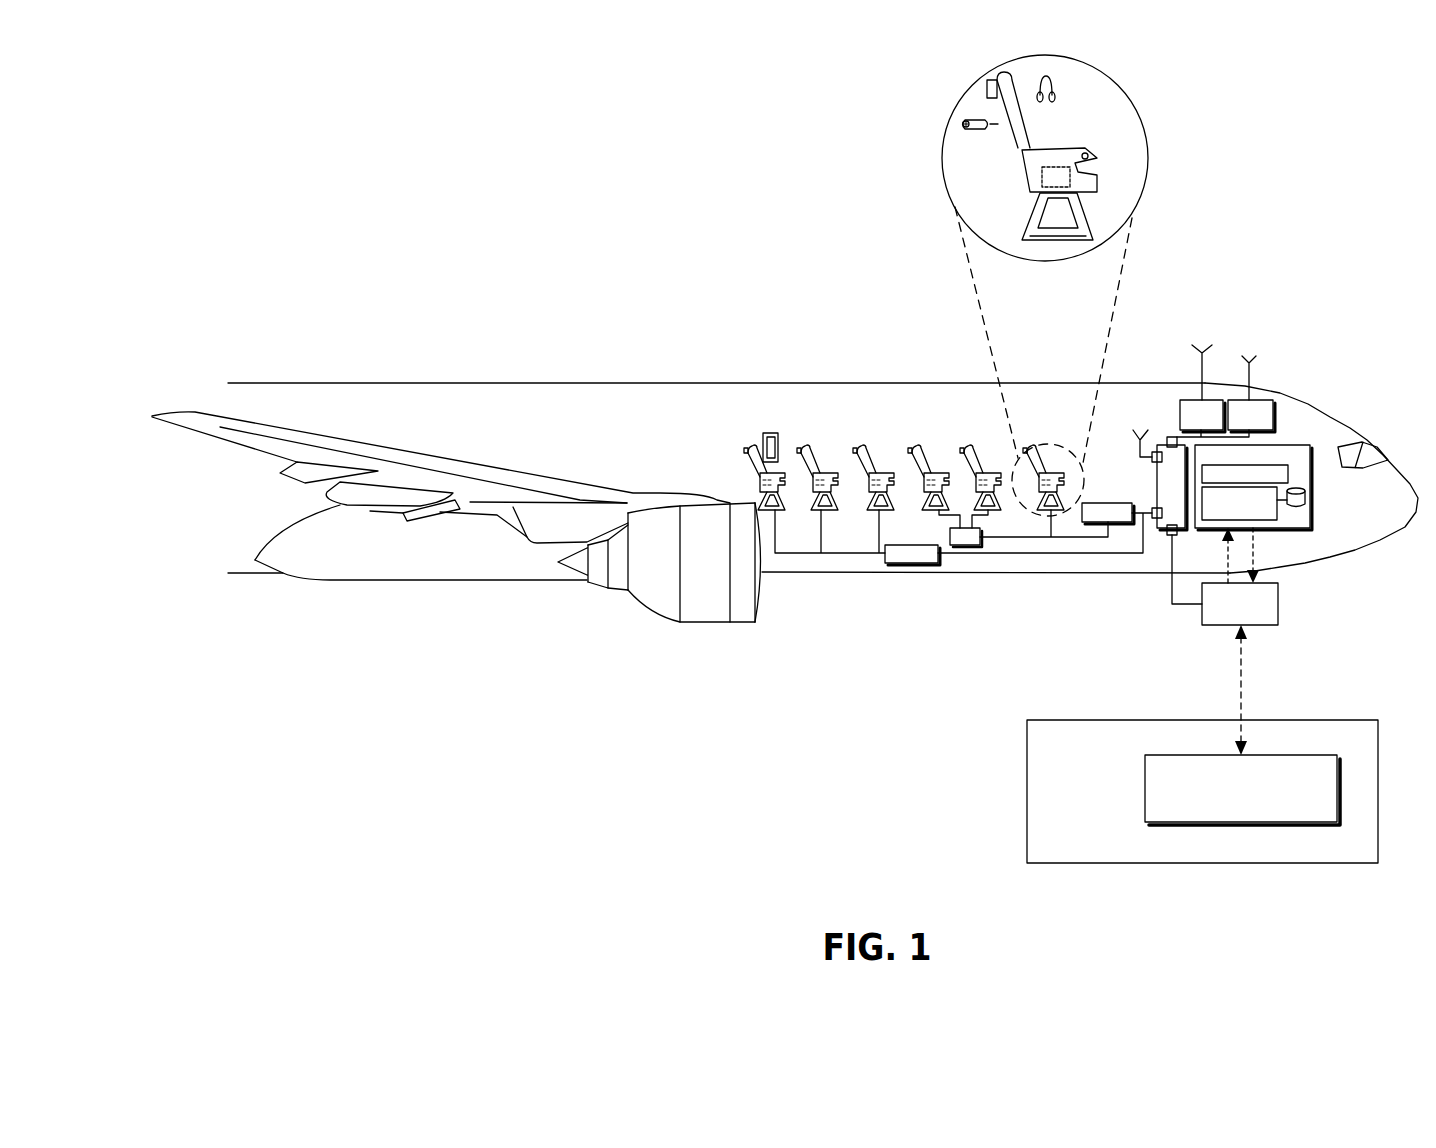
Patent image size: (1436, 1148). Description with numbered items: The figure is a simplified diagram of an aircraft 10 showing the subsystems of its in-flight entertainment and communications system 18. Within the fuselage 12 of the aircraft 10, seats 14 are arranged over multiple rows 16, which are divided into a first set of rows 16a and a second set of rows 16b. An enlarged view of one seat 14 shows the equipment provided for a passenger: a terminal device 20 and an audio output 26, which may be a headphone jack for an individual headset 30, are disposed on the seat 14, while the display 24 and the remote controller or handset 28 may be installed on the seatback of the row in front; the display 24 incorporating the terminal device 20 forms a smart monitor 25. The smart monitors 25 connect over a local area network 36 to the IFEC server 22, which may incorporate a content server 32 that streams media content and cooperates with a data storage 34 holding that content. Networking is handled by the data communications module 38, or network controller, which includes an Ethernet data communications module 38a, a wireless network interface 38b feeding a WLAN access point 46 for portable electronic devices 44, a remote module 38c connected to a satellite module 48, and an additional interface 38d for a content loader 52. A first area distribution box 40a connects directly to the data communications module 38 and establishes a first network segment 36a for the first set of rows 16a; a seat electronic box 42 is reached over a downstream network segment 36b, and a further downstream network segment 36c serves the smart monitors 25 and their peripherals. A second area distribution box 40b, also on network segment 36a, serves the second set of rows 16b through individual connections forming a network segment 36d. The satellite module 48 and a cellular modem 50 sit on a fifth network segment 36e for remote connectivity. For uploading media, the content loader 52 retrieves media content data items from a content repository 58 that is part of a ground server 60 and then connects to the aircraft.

The aircraft 10 is at (530, 450).
The fuselage 12 is at (519, 382).
The seat 14 is at (1030, 180).
The rows 16 is at (812, 392).
The first set of rows 16a is at (1065, 440).
The second set of rows 16b is at (735, 440).
The in-flight entertainment and communications (IFEC) system 18 is at (1312, 390).
The terminal device 20 is at (1066, 216).
The IFEC server 22 is at (1312, 507).
The display 24 is at (987, 88).
The smart monitor 25 is at (975, 82).
The audio output 26 is at (1090, 155).
The handset 28 is at (973, 133).
The headset 30 is at (1057, 95).
The content server 32 is at (1280, 513).
The data storage 34 is at (1306, 496).
The local area network 36 is at (795, 578).
The first network segment 36a is at (1143, 553).
The downstream network segment 36b is at (1077, 538).
The further downstream network segment 36c is at (961, 495).
The network segment 36d is at (845, 553).
The fifth network segment 36e is at (1238, 437).
The data communications module 38 is at (1157, 478).
The Ethernet data communications module 38a is at (1153, 505).
The wireless network interface 38b is at (1157, 440).
The remote module 38c is at (1173, 437).
The additional interface 38d is at (1175, 541).
The first area distribution box 40a is at (1124, 523).
The second area distribution box 40b is at (910, 563).
The seat electronic box 42 is at (965, 545).
The portable electronic device 44 is at (766, 435).
The WLAN access point 46 is at (1140, 435).
The satellite module 48 is at (1207, 398).
The cellular modem 50 is at (1257, 398).
The content loader 52 is at (1212, 626).
The content repository 58 is at (1238, 824).
The ground server 60 is at (1080, 864).